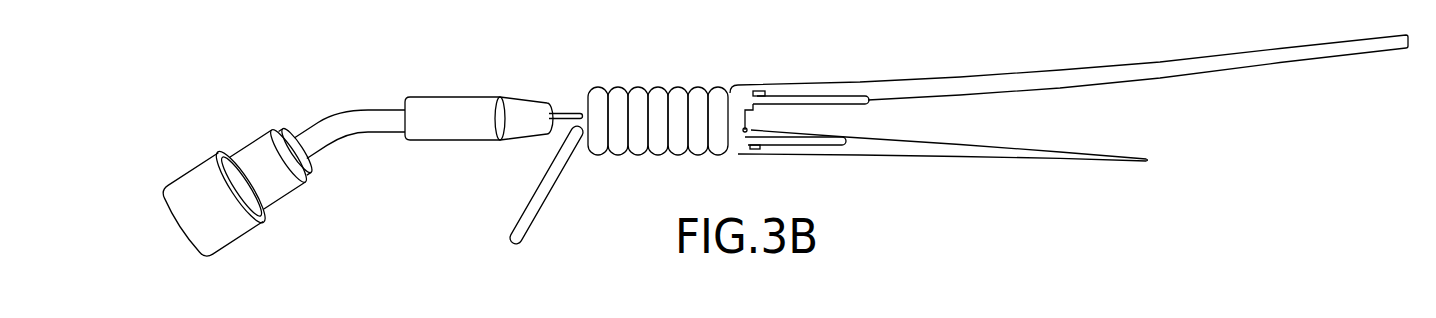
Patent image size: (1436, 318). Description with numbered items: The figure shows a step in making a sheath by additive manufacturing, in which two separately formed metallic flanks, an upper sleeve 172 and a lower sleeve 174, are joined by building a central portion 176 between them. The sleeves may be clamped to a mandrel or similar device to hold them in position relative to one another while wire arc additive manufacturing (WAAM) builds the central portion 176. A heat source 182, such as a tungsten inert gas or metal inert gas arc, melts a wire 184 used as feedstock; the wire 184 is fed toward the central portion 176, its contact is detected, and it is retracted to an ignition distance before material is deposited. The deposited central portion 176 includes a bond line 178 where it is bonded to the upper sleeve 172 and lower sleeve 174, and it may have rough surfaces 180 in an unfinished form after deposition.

The upper sleeve 172 is at (985, 77).
The lower sleeve 174 is at (1003, 149).
The central portion 176 is at (651, 97).
The bond line 178 is at (745, 130).
The rough surfaces 180 is at (602, 92).
The heat source 182 is at (372, 110).
The wire 184 is at (531, 203).